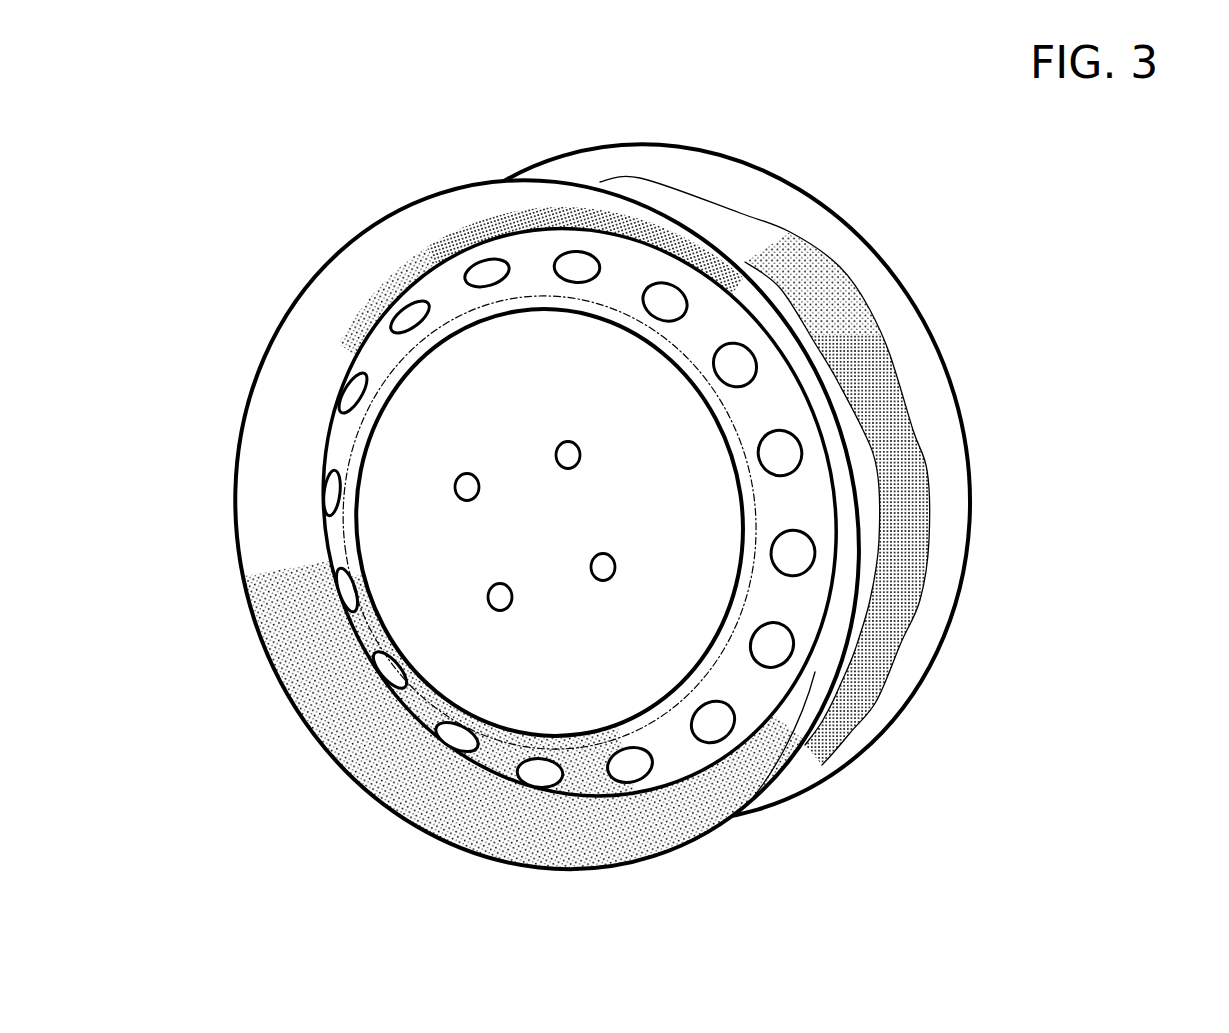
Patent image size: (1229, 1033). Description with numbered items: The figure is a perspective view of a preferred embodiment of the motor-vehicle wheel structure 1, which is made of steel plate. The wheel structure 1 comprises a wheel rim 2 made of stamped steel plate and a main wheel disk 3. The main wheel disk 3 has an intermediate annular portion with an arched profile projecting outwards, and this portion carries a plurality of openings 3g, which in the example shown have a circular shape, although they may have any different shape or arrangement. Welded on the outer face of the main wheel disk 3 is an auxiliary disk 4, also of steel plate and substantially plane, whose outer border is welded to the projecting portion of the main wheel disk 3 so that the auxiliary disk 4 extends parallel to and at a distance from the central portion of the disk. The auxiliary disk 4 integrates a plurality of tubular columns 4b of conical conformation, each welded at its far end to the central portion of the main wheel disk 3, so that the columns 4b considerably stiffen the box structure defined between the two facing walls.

The motor-vehicle wheel structure 1 is at (1052, 348).
The wheel rim 2 is at (407, 198).
The main wheel disk 3 is at (656, 471).
The openings 3g is at (728, 378).
The auxiliary disk 4 is at (492, 522).
The tubular columns 4b is at (490, 596).